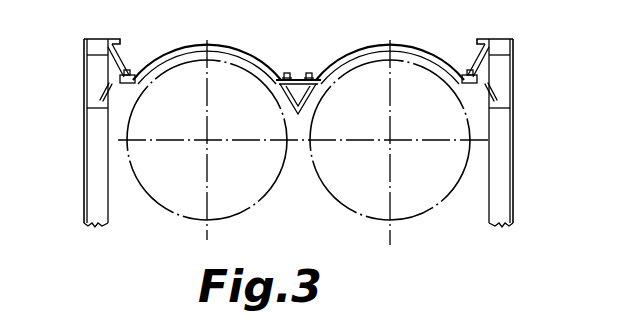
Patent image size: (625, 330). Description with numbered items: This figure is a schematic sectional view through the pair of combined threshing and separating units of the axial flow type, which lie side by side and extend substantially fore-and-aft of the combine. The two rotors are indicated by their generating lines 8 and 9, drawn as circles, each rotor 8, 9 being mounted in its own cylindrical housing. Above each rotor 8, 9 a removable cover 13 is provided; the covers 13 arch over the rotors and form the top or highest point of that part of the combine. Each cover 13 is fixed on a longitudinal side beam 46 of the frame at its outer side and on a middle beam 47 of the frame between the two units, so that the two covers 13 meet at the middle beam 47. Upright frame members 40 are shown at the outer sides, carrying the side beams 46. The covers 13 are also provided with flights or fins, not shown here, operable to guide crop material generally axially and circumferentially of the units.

The rotor 8 is at (168, 210).
The rotor 9 is at (421, 212).
The removable cover 13 is at (245, 50).
The support post 40 is at (72, 179).
The longitudinal side beam 46 is at (83, 63).
The middle beam 47 is at (298, 115).